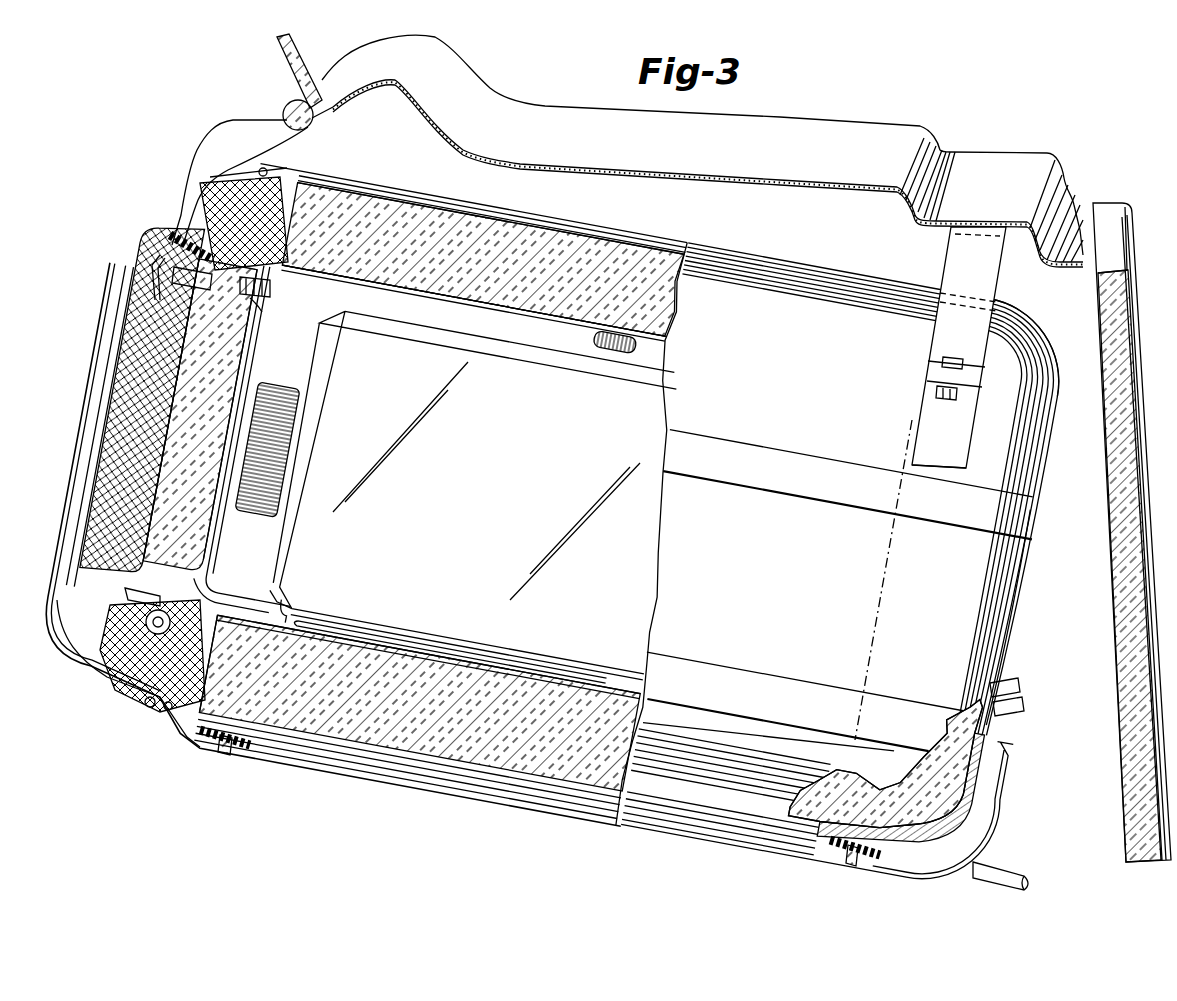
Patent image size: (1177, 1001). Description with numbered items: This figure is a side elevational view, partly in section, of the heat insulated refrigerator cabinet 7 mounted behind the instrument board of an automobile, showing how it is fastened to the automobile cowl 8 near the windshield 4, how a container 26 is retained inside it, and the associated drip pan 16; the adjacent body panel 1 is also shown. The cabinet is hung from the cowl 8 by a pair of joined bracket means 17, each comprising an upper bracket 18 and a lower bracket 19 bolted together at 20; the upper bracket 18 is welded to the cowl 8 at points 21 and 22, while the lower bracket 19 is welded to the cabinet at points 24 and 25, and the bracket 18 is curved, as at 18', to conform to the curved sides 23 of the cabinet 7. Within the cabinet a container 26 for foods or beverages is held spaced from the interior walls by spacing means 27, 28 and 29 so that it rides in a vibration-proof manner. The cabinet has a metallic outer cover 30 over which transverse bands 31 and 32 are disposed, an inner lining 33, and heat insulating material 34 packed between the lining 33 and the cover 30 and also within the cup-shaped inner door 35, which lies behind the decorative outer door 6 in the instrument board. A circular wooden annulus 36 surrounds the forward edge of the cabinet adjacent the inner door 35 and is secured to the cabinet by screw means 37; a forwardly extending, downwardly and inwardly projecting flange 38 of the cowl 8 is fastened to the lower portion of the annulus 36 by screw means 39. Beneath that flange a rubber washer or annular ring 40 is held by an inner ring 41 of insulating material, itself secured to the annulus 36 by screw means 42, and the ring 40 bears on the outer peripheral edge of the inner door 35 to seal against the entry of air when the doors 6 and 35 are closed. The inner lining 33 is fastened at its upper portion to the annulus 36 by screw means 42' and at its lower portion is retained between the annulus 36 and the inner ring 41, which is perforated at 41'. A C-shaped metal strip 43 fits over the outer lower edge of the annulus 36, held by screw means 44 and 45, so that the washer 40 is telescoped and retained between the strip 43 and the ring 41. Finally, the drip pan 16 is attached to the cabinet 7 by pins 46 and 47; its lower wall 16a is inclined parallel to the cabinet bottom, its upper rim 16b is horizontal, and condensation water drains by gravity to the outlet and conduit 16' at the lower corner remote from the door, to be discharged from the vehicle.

The roof pillar panel 1 is at (1145, 375).
The windshield 4 is at (280, 60).
The door 6 is at (90, 436).
The cabinet 7 is at (746, 256).
The automobile cowl 8 is at (815, 118).
The drip pan 16 is at (836, 784).
The outlet and conduit 16' is at (1006, 858).
The lower wall 16a is at (633, 820).
The upper edge or rim 16b is at (906, 740).
The bracket means 17 is at (950, 385).
The bracket 18 is at (954, 483).
The curved portion of bracket 18' is at (924, 397).
The bracket 19 is at (936, 388).
The bolt 20 is at (950, 371).
The weld point 21 is at (965, 224).
The weld point 22 is at (999, 224).
The curved side 23 is at (1036, 320).
The weld point 24 is at (150, 262).
The weld point 25 is at (958, 430).
The container 26 is at (446, 336).
The spacing means 27 is at (612, 351).
The spacing means 28 is at (280, 610).
The spacing means 29 is at (330, 630).
The outer cover 30 is at (986, 630).
The transverse band 31 is at (807, 500).
The transverse band 32 is at (800, 266).
The inner lining 33 is at (372, 290).
The heat insulating material 34 is at (550, 232).
The inner door 35 is at (150, 268).
The wooden annulus 36 is at (212, 166).
The screw means 37 is at (267, 170).
The flange 38 is at (170, 240).
The screw means 39 is at (196, 206).
The rubber washer 40 is at (126, 594).
The inner ring 41 is at (277, 436).
The perforation 41' is at (231, 585).
The screw means 42 is at (255, 288).
The screw means 42' is at (288, 298).
The metal strip 43 is at (102, 682).
The screw means 44 is at (68, 650).
The screw means 45 is at (166, 700).
The pin 46 is at (856, 860).
The pin 47 is at (226, 752).